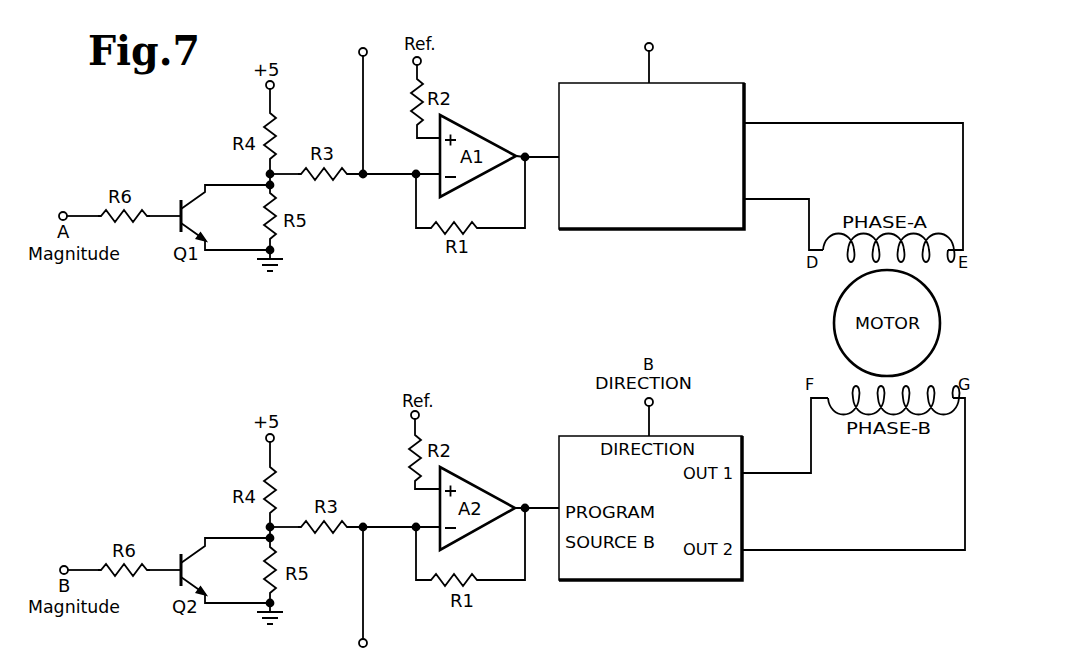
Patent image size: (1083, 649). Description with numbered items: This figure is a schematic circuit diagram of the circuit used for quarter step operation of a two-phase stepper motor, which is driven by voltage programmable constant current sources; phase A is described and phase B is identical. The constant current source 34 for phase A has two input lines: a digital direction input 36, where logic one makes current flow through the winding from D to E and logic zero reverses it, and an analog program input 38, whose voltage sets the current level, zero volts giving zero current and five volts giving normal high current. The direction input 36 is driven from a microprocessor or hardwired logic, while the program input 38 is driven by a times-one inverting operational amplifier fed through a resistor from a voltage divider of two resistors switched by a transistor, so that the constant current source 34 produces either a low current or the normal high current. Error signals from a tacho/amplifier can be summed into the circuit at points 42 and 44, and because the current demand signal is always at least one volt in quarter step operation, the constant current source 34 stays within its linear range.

The constant current source 34 is at (746, 86).
The direction input 36 is at (645, 48).
The program input 38 is at (524, 153).
The summing point 42 is at (363, 48).
The summing point 44 is at (368, 644).